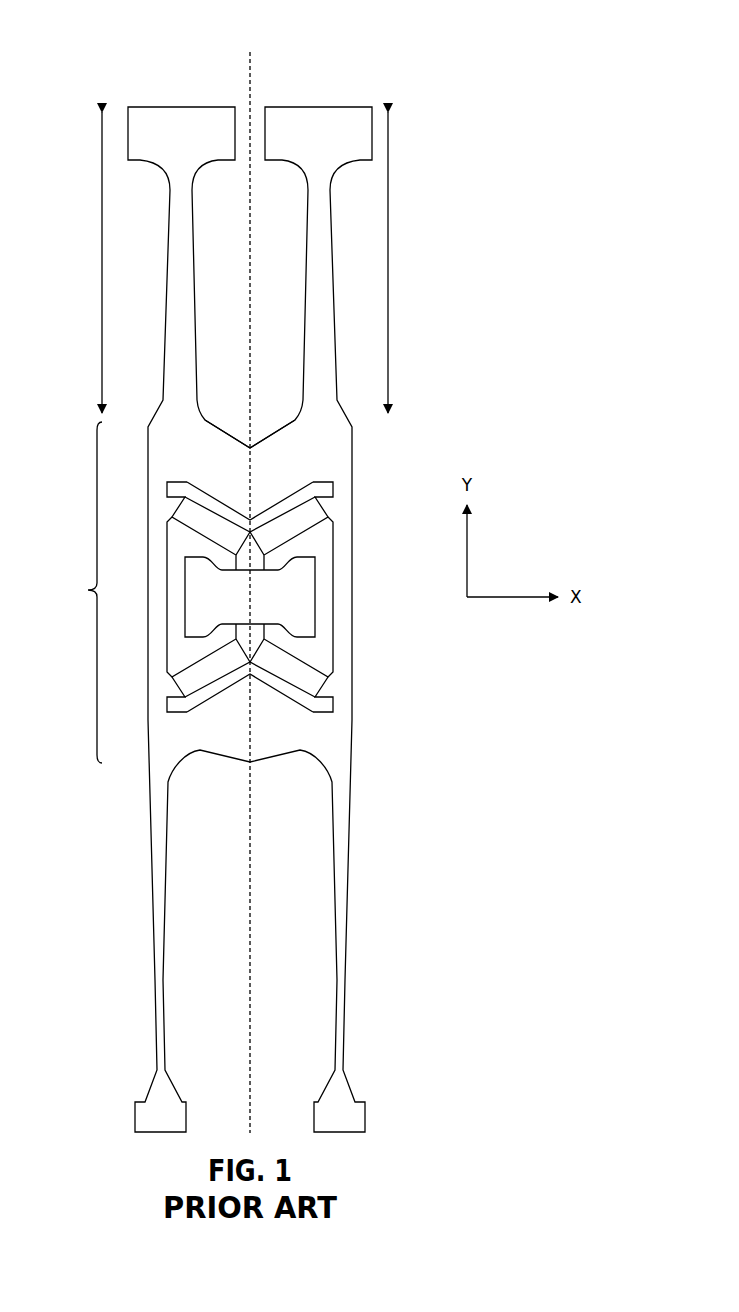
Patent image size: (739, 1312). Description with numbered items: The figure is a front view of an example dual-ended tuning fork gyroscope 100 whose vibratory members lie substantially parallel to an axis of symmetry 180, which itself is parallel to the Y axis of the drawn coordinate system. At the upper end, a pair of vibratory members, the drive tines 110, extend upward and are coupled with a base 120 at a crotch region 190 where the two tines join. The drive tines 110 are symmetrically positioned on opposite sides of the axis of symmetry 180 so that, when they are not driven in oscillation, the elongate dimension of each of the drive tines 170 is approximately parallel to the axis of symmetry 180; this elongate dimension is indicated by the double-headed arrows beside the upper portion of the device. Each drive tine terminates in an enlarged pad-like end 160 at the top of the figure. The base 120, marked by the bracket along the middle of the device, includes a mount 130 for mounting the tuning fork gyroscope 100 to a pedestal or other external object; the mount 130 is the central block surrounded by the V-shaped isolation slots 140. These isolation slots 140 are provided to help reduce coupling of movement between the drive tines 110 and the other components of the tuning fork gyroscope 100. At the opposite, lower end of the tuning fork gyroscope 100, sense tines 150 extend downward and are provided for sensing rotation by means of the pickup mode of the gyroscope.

The tuning fork gyroscope 100 is at (556, 110).
The drive tines 110 is at (184, 265).
The base 120 is at (190, 592).
The mount 130 is at (300, 608).
The isolation slots 140 is at (327, 490).
The sense tines 150 is at (162, 855).
The mounting pads 160 is at (190, 118).
The elongate dimension of the drive tines 170 is at (100, 278).
The axis of symmetry 180 is at (248, 68).
The crotch region 190 is at (270, 458).